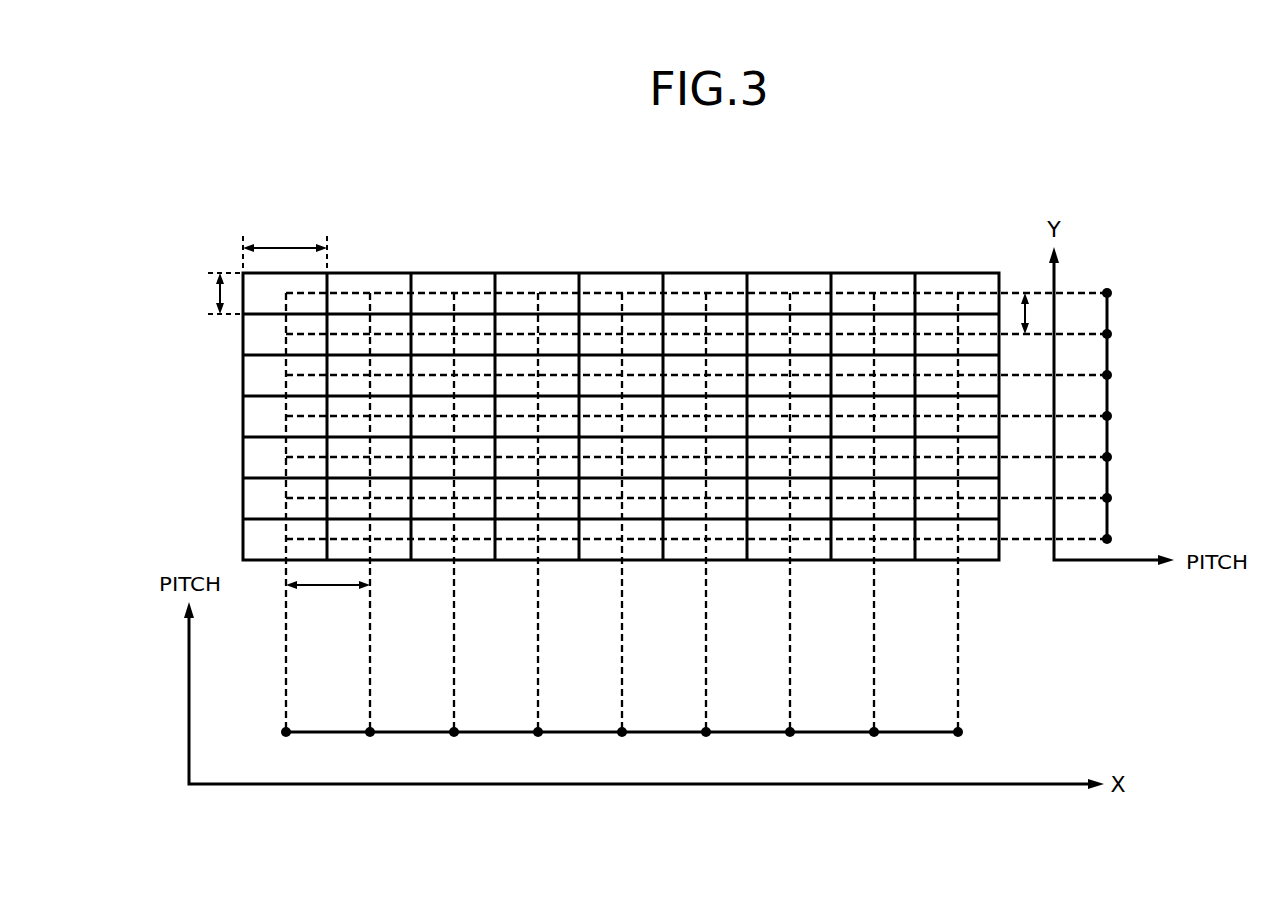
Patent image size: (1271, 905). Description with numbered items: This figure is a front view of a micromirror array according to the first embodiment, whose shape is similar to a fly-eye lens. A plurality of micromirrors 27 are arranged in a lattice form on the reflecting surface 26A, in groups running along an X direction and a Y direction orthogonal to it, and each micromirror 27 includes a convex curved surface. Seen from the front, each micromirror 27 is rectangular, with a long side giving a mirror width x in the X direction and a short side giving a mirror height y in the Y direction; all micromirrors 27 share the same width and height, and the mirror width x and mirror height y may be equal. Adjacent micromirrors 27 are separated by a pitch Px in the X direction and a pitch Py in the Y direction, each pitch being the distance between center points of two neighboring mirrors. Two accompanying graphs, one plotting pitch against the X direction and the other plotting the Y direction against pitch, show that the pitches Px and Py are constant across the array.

The reflecting surface 26A is at (682, 239).
The micromirror 27 is at (311, 287).
The pitch in the X direction Px is at (327, 590).
The pitch in the Y direction Py is at (1028, 307).
The mirror width x is at (286, 243).
The mirror height y is at (213, 291).